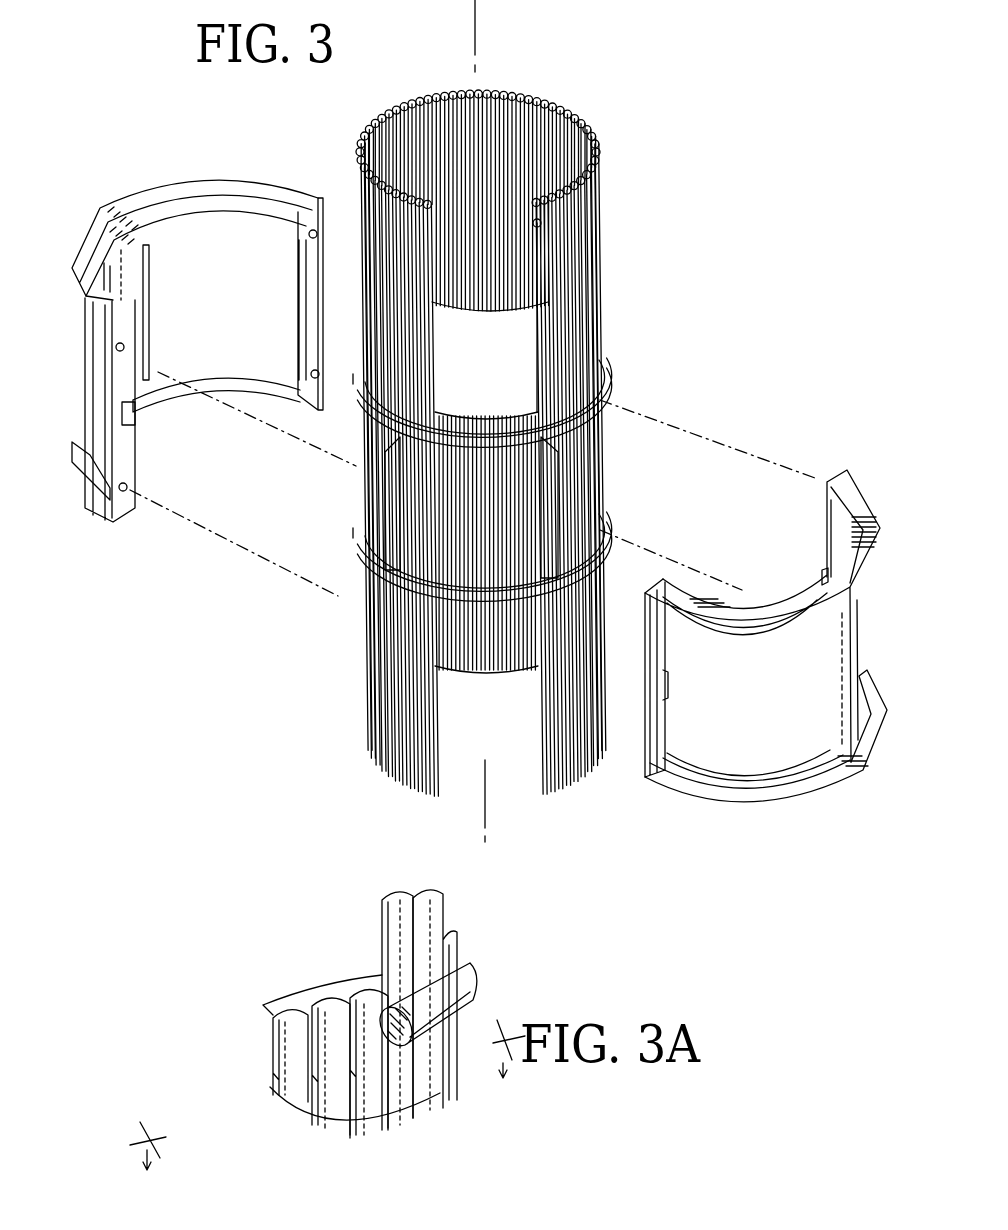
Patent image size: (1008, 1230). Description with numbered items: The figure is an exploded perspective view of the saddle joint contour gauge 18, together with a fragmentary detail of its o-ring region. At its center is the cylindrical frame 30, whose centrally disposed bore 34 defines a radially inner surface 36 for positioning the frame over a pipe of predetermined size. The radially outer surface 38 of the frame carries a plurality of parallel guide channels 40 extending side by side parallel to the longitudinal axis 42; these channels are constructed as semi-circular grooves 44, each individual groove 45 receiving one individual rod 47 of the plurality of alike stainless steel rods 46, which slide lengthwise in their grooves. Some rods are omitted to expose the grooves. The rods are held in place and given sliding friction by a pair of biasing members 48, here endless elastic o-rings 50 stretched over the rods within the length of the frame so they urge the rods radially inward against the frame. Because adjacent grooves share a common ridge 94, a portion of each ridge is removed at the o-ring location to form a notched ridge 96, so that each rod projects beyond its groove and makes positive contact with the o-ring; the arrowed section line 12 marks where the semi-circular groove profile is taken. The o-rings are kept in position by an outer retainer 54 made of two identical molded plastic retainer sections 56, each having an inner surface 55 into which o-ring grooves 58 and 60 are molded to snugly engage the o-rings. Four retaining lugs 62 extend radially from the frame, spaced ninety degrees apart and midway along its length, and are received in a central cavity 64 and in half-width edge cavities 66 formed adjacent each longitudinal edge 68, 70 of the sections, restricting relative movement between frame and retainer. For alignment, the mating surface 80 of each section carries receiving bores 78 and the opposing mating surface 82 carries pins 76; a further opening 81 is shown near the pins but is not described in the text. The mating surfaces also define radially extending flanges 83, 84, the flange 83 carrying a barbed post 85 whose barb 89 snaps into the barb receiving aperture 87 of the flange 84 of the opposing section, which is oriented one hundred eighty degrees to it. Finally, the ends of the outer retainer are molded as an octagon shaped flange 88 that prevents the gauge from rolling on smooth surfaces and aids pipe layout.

In FIG. 3A, the section line 12 is at (327, 1108).
In FIG. 3, the contour gauge 18 is at (774, 146).
In FIG. 3A, the contour gauge 18 is at (204, 1026).
In FIG. 3, the cylindrical frame 30 is at (459, 394).
In FIG. 3A, the cylindrical frame 30 is at (306, 930).
In FIG. 3, the centrally disposed bore 34 is at (522, 353).
In FIG. 3, the radially inner surface 36 is at (498, 331).
In FIG. 3A, the radially inner surface 36 is at (290, 998).
In FIG. 3, the radially outer surface 38 is at (447, 516).
In FIG. 3A, the radially outer surface 38 is at (330, 1146).
In FIG. 3, the guide channels 40 is at (510, 520).
In FIG. 3A, the guide channels 40 is at (290, 1092).
In FIG. 3, the longitudinal axis 42 is at (476, 28).
In FIG. 3, the grooves 44 is at (450, 550).
In FIG. 3A, the grooves 44 is at (366, 1162).
In FIG. 3, the groove 45 is at (500, 545).
In FIG. 3A, the groove 45 is at (390, 1125).
In FIG. 3, the rods 46 is at (608, 152).
In FIG. 3, the rod 47 is at (518, 100).
In FIG. 3A, the rod 47 is at (385, 906).
In FIG. 3, the biasing member 48 is at (612, 378).
In FIG. 3A, the biasing member 48 is at (478, 1032).
In FIG. 3, the o-rings 50 is at (605, 386).
In FIG. 3A, the o-rings 50 is at (470, 990).
In FIG. 3, the outer retainer 54 is at (65, 320).
In FIG. 3, the inner surface 55 is at (193, 347).
In FIG. 3, the retainer section 56 is at (105, 210).
In FIG. 3, the o-ring groove 58 is at (175, 212).
In FIG. 3, the o-ring groove 60 is at (212, 385).
In FIG. 3, the retaining lugs 62 is at (395, 470).
In FIG. 3, the central cavity 64 is at (152, 305).
In FIG. 3, the edge cavities 66 is at (296, 272).
In FIG. 3, the longitudinal edge 68 is at (140, 500).
In FIG. 3, the longitudinal edge 70 is at (300, 200).
In FIG. 3, the pins 76 is at (320, 374).
In FIG. 3, the receiving bores 78 is at (116, 355).
In FIG. 3, the mating surface 80 is at (128, 390).
In FIG. 3, the hole 81 is at (318, 234).
In FIG. 3, the mating surface 82 is at (300, 340).
In FIG. 3, the flange 83 is at (90, 480).
In FIG. 3, the flange 84 is at (320, 405).
In FIG. 3, the barbed post 85 is at (152, 422).
In FIG. 3, the barb receiving aperture 87 is at (668, 690).
In FIG. 3, the octagon shaped flange 88 is at (156, 178).
In FIG. 3, the barb 89 is at (136, 428).
In FIG. 3, the common ridge 94 is at (500, 600).
In FIG. 3A, the common ridge 94 is at (320, 1118).
In FIG. 3, the notched ridge 96 is at (482, 420).
In FIG. 3A, the notched ridge 96 is at (320, 1032).